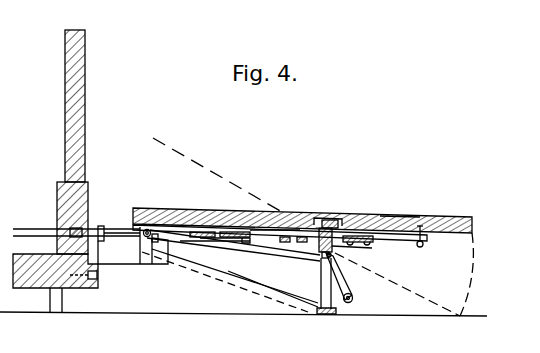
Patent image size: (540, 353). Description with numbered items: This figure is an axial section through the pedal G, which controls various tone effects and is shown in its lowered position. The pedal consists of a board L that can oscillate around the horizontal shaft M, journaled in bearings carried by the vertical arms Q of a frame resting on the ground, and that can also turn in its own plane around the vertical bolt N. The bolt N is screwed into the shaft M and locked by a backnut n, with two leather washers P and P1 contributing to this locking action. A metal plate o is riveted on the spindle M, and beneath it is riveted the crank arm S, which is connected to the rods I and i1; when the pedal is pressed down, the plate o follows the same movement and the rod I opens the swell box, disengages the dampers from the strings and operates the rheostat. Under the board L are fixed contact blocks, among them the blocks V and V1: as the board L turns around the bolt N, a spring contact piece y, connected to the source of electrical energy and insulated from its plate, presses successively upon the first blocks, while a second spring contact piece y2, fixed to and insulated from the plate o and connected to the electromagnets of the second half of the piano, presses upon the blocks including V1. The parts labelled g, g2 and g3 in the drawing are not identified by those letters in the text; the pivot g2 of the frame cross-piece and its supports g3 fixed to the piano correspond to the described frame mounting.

The rod I is at (30, 217).
The bracket g is at (198, 266).
The bracket pivot screw g2 is at (137, 231).
The bracket lug g3 is at (117, 264).
The pedal G is at (471, 216).
The board L is at (404, 217).
The leather washer P is at (380, 222).
The leather washer P1 is at (322, 216).
The metal plate o is at (350, 222).
The contact block V is at (223, 229).
The contact block V1 is at (195, 228).
The spring contact piece y is at (250, 214).
The second spring contact piece y2 is at (215, 241).
The connecting rod i1 is at (264, 273).
The vertical bolt N is at (333, 218).
The horizontal shaft M is at (338, 247).
The backnut n is at (336, 251).
The crank arm S is at (355, 297).
The vertical arm Q is at (322, 307).